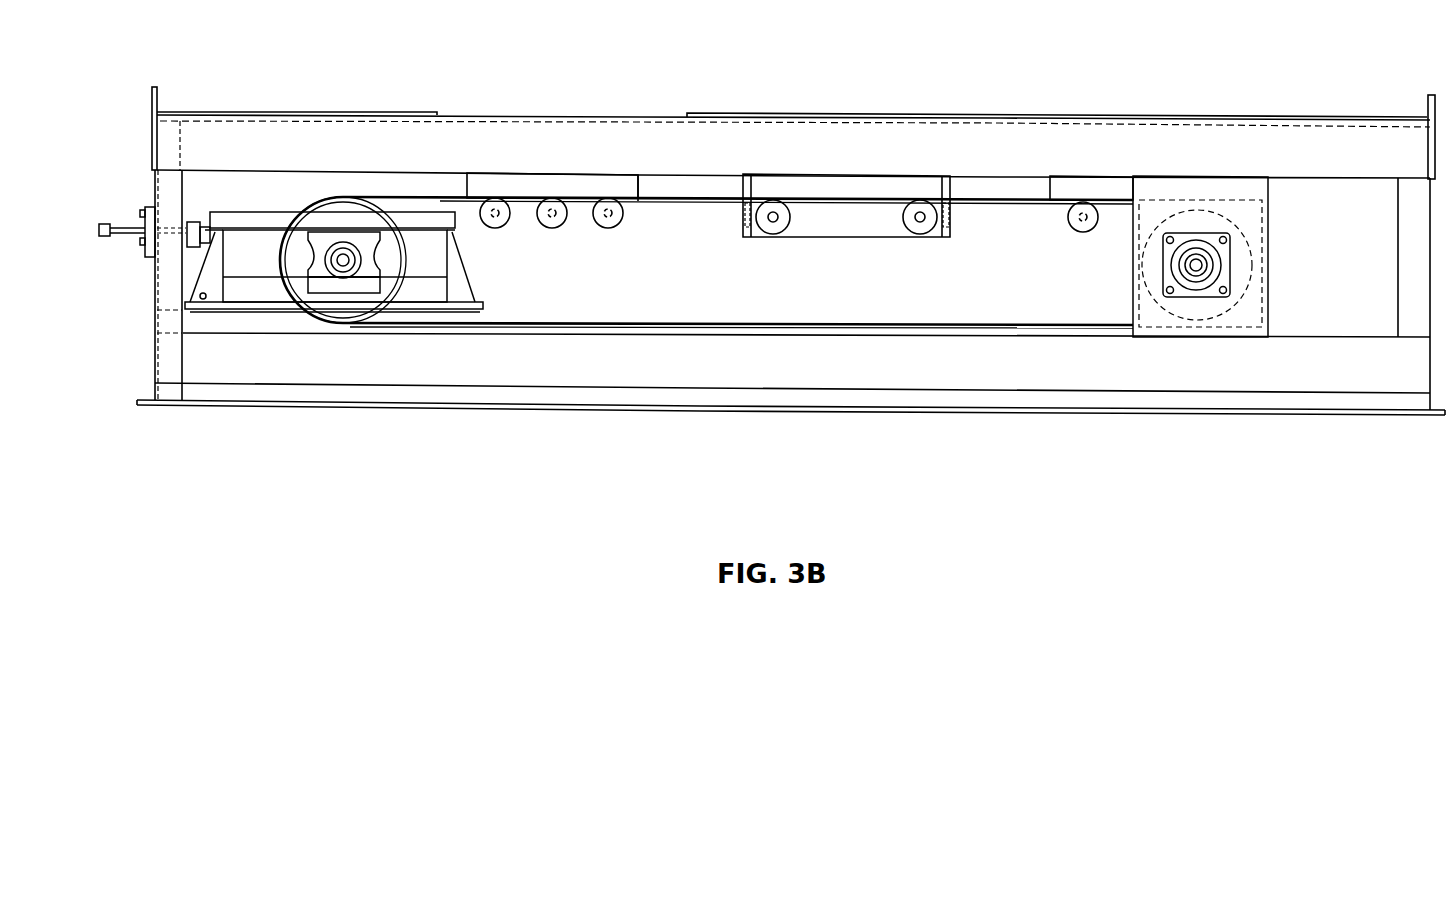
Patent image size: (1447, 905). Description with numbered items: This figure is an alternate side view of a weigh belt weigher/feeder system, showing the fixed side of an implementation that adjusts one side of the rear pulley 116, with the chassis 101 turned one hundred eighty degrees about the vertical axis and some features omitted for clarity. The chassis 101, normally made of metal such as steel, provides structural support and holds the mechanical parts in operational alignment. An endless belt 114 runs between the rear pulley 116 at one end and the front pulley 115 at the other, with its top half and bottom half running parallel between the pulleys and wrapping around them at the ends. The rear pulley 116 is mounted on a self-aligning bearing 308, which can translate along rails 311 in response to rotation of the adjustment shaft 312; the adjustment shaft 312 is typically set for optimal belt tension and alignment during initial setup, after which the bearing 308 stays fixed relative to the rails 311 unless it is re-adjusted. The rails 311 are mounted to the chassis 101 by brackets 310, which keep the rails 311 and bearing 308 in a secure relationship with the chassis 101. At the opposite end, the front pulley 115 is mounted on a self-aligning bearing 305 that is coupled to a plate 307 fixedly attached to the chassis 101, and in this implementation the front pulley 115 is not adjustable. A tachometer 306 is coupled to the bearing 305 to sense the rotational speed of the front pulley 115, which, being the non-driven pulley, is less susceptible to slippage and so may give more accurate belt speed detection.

The chassis 101 is at (1002, 114).
The belt 114 is at (417, 196).
The rear pulley 116 is at (378, 196).
The bearing 308 is at (343, 279).
The brackets 310 is at (218, 304).
The rails 311 is at (279, 208).
The adjustment shaft 312 is at (103, 242).
The bearing 305 is at (1177, 300).
The tachometer 306 is at (1196, 252).
The plate 307 is at (1268, 280).
The front pulley 115 is at (1160, 308).